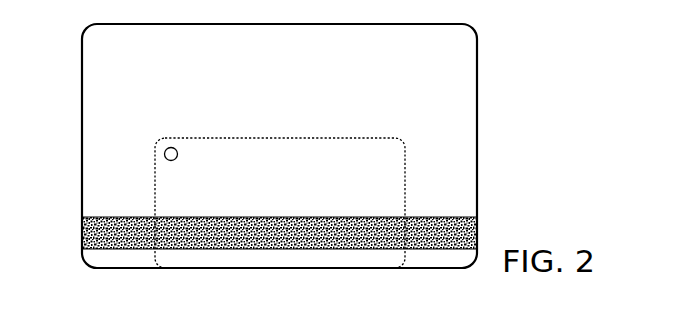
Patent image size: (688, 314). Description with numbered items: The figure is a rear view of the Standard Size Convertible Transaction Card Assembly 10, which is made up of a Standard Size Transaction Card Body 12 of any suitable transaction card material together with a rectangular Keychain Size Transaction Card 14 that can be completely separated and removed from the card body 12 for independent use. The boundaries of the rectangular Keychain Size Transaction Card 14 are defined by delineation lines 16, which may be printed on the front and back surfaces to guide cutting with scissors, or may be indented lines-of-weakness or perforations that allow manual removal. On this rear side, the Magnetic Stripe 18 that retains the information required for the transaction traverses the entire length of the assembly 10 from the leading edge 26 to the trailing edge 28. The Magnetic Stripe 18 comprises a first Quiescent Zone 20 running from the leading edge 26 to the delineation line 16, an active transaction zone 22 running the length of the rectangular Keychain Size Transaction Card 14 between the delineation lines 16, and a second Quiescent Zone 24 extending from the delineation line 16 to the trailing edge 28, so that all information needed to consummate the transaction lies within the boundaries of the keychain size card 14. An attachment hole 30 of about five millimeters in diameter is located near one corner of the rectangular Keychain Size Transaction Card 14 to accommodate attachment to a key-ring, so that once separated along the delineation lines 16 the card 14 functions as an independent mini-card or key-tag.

The Standard Size Convertible Transaction Card Assembly 10 is at (544, 78).
The Standard Size Transaction Card Body 12 is at (462, 117).
The rectangular Keychain Size Transaction Card 14 is at (392, 186).
The delineation lines 16 is at (152, 172).
The Magnetic Stripe 18 is at (479, 222).
The first Quiescent Zone 20 is at (98, 250).
The active (transaction) zone 22 is at (216, 250).
The second Quiescent Zone 24 is at (428, 249).
The leading edge 26 is at (80, 174).
The trailing edge 28 is at (479, 142).
The attachment hole 30 is at (166, 148).